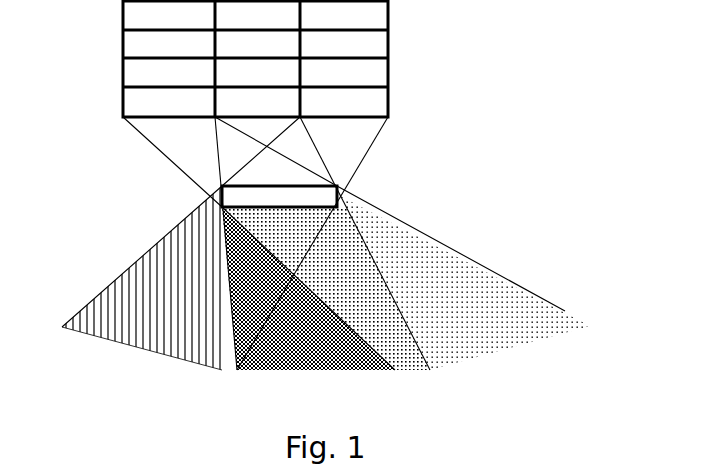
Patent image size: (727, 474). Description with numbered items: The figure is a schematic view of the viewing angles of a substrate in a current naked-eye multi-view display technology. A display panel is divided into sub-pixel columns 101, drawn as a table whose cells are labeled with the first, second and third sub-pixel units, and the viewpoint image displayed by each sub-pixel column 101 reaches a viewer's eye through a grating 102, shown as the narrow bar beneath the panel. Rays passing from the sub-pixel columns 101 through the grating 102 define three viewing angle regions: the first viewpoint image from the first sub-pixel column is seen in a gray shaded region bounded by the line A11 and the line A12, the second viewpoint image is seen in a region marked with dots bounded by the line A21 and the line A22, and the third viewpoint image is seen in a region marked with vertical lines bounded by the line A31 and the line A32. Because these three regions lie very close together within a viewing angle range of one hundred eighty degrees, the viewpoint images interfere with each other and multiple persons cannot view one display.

The sub-pixel column 101 is at (388, 93).
The grating 102 is at (338, 192).
The line A11 is at (205, 156).
The line A12 is at (465, 283).
The line A21 is at (291, 303).
The line A22 is at (350, 295).
The line A31 is at (142, 278).
The line A32 is at (319, 151).